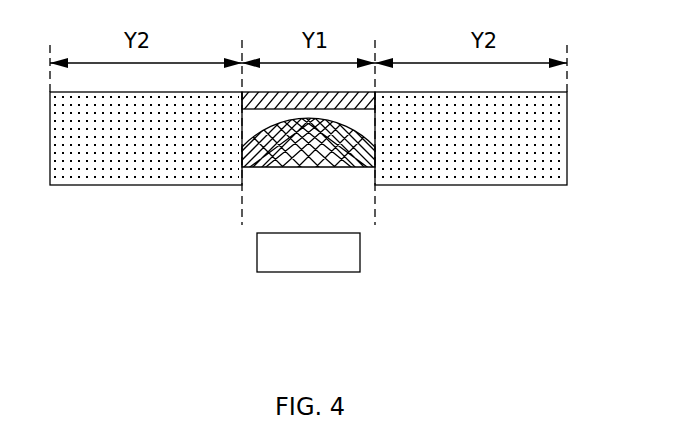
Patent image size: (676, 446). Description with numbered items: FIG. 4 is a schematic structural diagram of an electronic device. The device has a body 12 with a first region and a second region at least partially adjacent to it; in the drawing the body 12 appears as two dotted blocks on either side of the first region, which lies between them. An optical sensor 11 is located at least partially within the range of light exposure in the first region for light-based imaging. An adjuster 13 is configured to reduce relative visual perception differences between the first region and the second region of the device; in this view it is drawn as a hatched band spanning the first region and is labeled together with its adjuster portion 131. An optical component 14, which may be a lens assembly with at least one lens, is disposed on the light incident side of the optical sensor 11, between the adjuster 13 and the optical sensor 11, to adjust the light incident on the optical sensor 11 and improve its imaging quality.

The optical sensor 11 is at (370, 282).
The body 12 is at (503, 168).
The adjuster 13 is at (267, 197).
The light adjusting portion of layer 13 131 is at (276, 110).
The optical component 14 is at (352, 162).